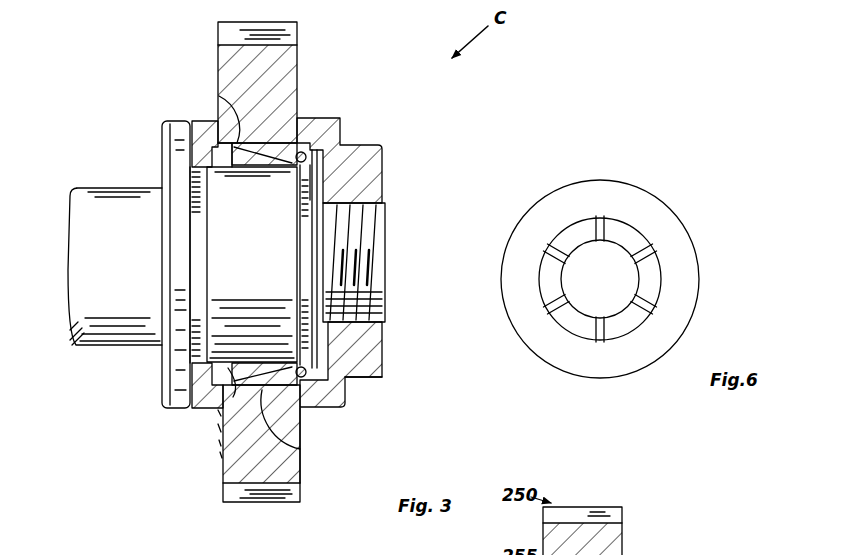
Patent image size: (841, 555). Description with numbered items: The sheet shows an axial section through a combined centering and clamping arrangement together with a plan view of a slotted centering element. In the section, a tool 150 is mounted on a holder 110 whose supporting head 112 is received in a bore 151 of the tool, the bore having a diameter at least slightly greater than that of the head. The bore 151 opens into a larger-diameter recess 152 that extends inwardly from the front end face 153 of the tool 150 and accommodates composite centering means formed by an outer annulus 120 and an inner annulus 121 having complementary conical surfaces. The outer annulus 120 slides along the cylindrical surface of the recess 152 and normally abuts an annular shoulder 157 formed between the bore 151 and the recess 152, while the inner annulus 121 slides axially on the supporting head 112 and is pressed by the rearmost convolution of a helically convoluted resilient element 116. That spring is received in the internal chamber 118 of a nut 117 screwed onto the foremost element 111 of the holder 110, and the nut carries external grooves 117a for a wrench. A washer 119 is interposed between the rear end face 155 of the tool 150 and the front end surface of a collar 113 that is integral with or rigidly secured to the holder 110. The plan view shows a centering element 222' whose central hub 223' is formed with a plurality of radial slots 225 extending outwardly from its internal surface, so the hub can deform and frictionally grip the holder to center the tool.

In FIG. 3, the holder 110 is at (68, 190).
In FIG. 3, the foremost element of the holder 111 is at (367, 252).
In FIG. 3, the supporting head 112 is at (252, 288).
In FIG. 3, the collar 113 is at (173, 155).
In FIG. 3, the helically convoluted resilient element 116 is at (332, 126).
In FIG. 3, the nut 117 is at (367, 178).
In FIG. 3, the external grooves 117a is at (375, 379).
In FIG. 3, the internal chamber 118 is at (328, 358).
In FIG. 3, the washer 119 is at (198, 127).
In FIG. 3, the outer annulus 120 is at (283, 138).
In FIG. 3, the inner annulus 121 is at (300, 150).
In FIG. 3, the tool 150 is at (210, 46).
In FIG. 3, the bore 151 is at (223, 408).
In FIG. 3, the recess 152 is at (300, 451).
In FIG. 3, the front end face 153 is at (300, 430).
In FIG. 3, the rear end face 155 is at (222, 458).
In FIG. 3, the annular shoulder 157 is at (240, 140).
In FIG. 6, the centering element 222' is at (616, 279).
In FIG. 6, the hub 223' is at (606, 287).
In FIG. 6, the radial slots 225 is at (601, 226).